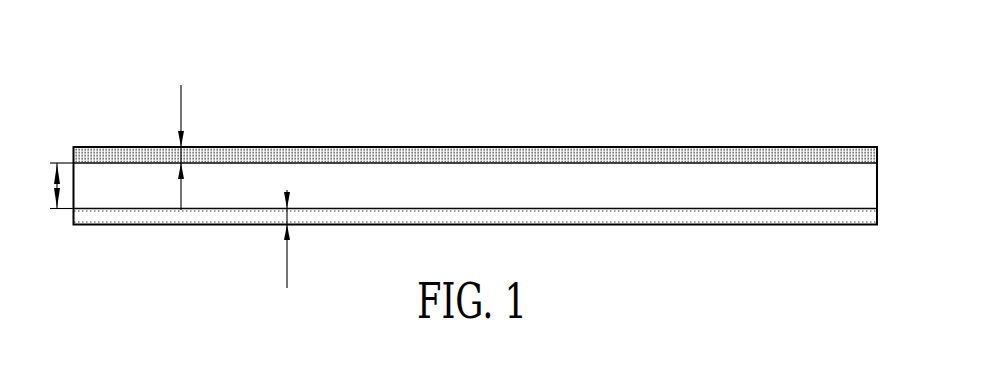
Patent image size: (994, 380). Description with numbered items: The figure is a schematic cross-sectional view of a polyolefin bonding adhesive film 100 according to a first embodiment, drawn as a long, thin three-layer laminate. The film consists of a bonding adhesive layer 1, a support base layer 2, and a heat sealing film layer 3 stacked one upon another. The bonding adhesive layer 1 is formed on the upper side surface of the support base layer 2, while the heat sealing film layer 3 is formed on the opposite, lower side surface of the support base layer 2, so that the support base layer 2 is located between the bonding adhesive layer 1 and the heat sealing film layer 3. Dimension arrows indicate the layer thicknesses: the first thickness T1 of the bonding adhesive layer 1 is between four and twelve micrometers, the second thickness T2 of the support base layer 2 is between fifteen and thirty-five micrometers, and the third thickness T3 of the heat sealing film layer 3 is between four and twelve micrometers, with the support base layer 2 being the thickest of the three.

The polyolefin bonding adhesive film 100 is at (474, 119).
The bonding adhesive layer 1 is at (868, 153).
The support base layer 2 is at (868, 189).
The heat sealing film layer 3 is at (866, 217).
The first thickness T1 is at (168, 147).
The second thickness T2 is at (47, 186).
The third thickness T3 is at (273, 239).